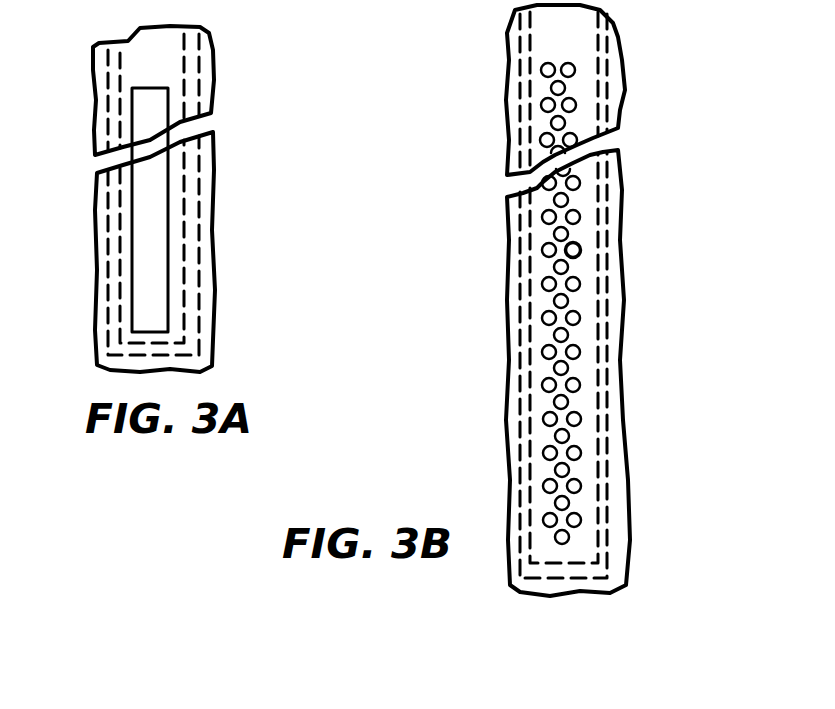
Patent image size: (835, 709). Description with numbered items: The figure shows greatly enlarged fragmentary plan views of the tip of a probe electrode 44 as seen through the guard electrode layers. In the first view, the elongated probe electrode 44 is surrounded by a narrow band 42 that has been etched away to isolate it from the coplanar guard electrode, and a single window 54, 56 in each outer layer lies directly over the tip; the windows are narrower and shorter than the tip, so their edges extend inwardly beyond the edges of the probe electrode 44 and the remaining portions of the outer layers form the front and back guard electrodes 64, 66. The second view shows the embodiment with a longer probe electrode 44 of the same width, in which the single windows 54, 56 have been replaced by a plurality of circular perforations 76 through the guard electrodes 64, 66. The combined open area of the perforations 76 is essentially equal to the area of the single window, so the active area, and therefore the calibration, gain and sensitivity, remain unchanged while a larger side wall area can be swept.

In FIG. 3A, the band 42 is at (192, 226).
In FIG. 3B, the band 42 is at (600, 438).
In FIG. 3A, the probe electrode 44 is at (134, 86).
In FIG. 3B, the probe electrode 44 is at (575, 63).
In FIG. 3A, the window 54 is at (201, 210).
In FIG. 3B, the window 54 is at (639, 356).
In FIG. 3B, the window 56 is at (639, 356).
In FIG. 3A, the front guard electrode 64 is at (215, 252).
In FIG. 3B, the front guard electrode 64 is at (622, 373).
In FIG. 3A, the back guard electrode 66 is at (215, 252).
In FIG. 3B, the back guard electrode 66 is at (622, 373).
In FIG. 3B, the perforations 76 is at (625, 238).